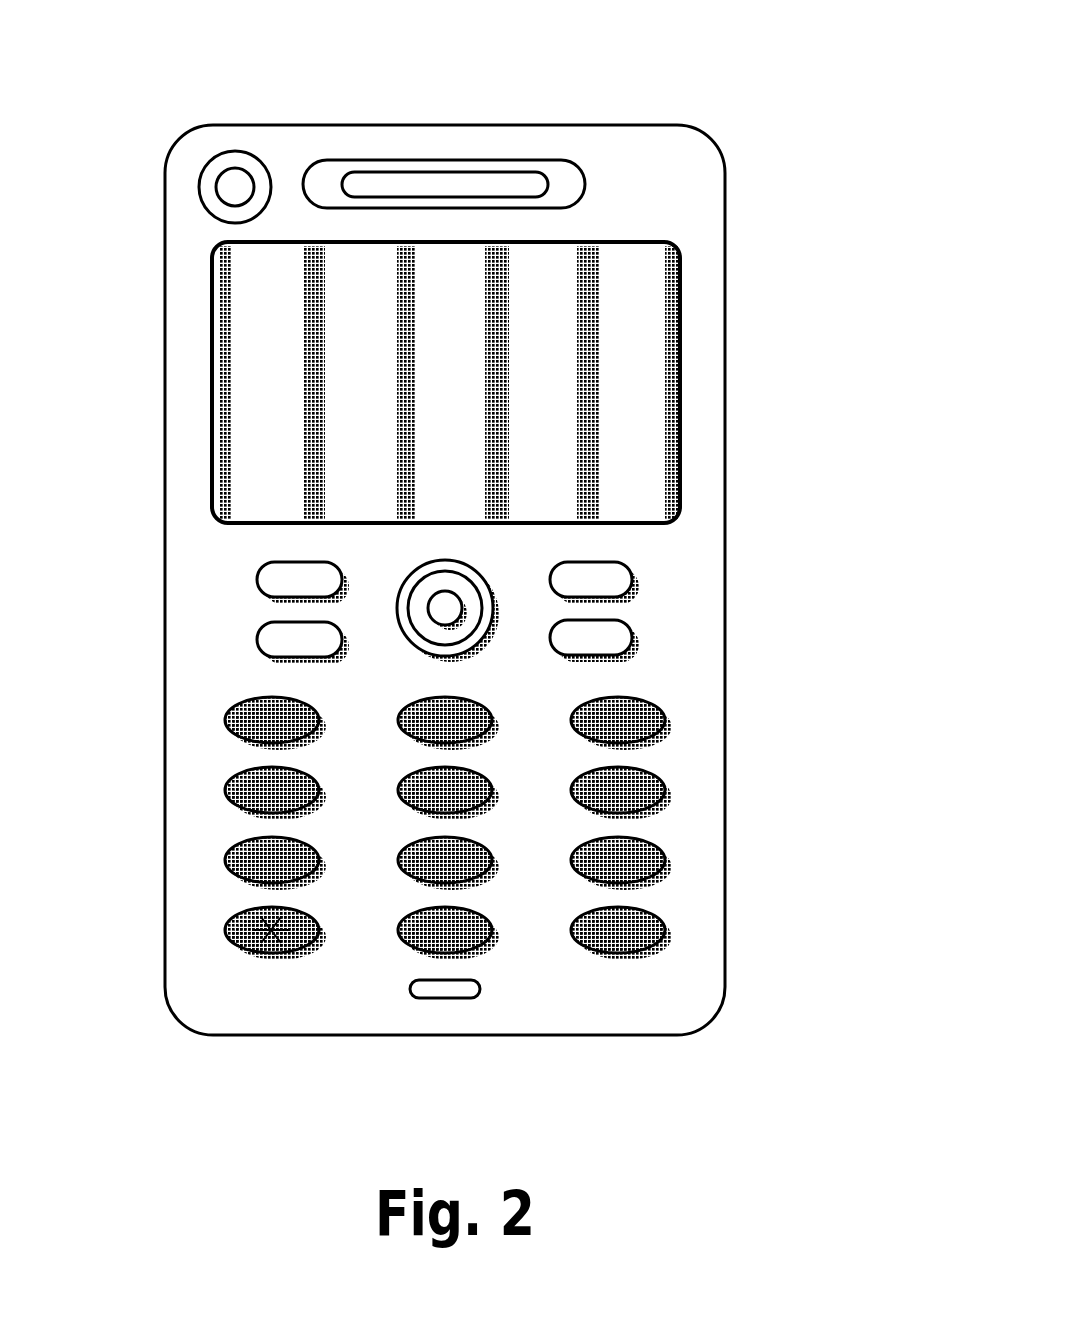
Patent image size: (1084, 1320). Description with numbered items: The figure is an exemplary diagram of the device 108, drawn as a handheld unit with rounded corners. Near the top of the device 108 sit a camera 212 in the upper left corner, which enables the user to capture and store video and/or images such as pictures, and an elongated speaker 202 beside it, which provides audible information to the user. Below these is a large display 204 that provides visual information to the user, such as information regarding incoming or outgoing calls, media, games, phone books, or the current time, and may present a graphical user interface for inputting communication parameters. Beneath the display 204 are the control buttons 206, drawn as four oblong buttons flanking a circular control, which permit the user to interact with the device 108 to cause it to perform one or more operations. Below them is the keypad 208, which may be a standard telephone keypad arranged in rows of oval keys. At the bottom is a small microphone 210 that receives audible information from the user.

The device 108 is at (444, 125).
The speaker 202 is at (538, 160).
The display 204 is at (680, 382).
The control buttons 206 is at (654, 560).
The keypad 208 is at (683, 957).
The microphone 210 is at (457, 998).
The camera 212 is at (199, 187).